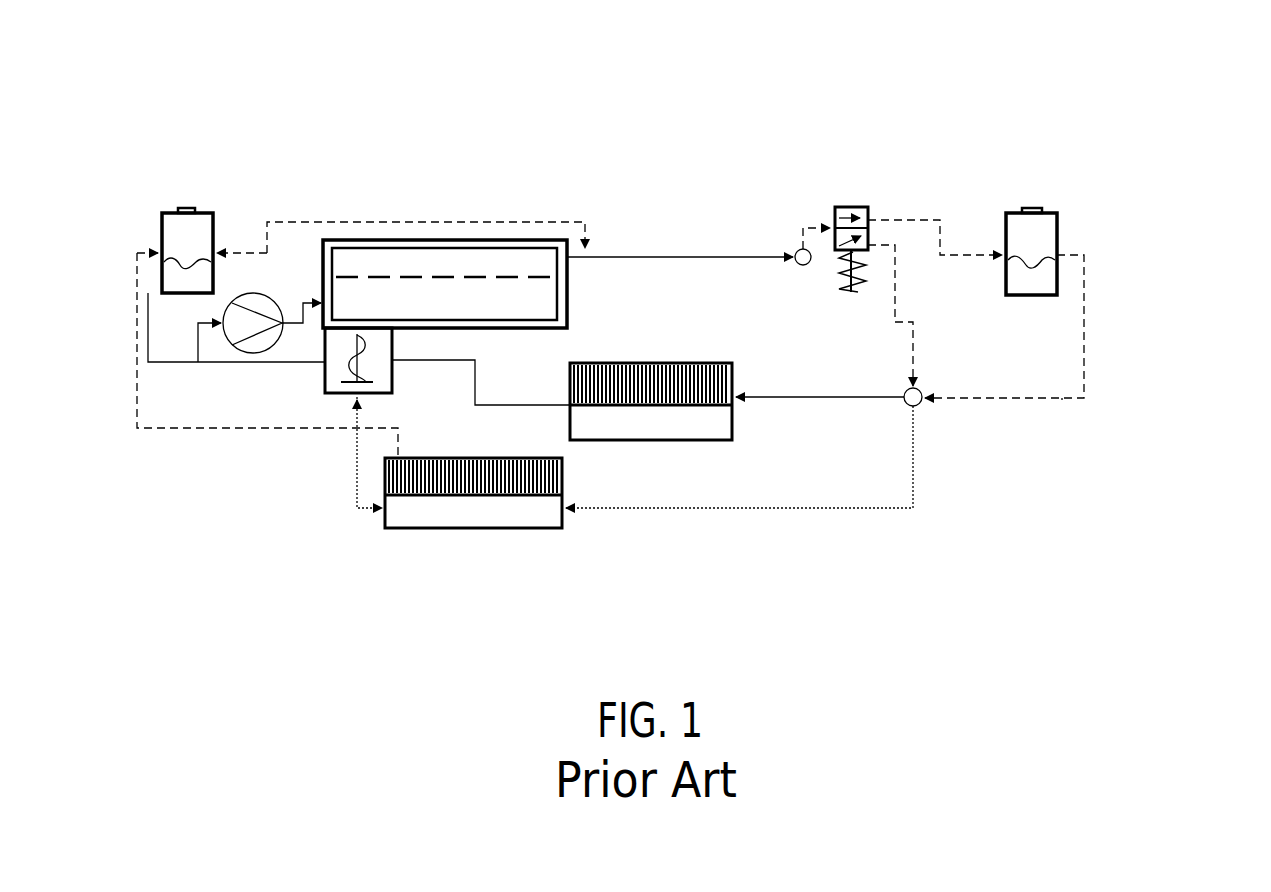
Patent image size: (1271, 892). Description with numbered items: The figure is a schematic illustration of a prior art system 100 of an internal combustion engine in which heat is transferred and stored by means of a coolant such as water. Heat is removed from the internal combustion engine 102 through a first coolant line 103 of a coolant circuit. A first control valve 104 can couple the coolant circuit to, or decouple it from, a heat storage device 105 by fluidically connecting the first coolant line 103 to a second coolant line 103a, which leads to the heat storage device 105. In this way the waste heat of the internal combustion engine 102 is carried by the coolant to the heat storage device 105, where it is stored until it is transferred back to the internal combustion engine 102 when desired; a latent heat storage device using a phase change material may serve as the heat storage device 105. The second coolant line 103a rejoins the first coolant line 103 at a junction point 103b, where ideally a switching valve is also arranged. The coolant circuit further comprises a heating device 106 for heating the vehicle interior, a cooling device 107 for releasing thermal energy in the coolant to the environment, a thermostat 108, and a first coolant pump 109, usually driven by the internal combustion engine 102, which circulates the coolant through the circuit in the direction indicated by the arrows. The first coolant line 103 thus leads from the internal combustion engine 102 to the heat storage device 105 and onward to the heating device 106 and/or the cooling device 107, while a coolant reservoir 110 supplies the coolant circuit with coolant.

The system 100 is at (1106, 289).
The internal combustion engine 102 is at (567, 292).
The first coolant line 103 is at (673, 255).
The second coolant line 103a is at (1062, 398).
The junction point 103b is at (918, 405).
The first control valve 104 is at (850, 207).
The heat storage device 105 is at (1040, 232).
The heating device 106 is at (732, 415).
The cooling device 107 is at (472, 528).
The thermostat 108 is at (317, 390).
The first coolant pump 109 is at (227, 340).
The coolant reservoir 110 is at (188, 208).